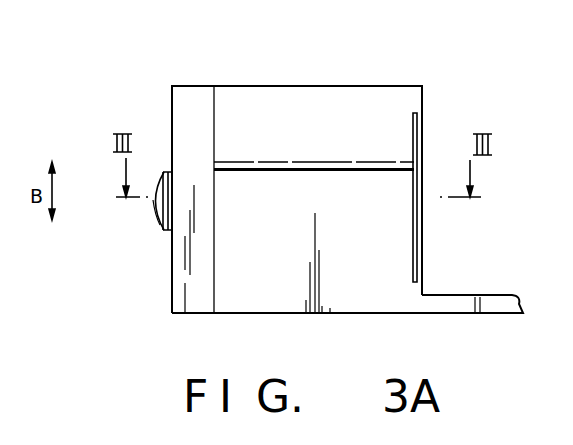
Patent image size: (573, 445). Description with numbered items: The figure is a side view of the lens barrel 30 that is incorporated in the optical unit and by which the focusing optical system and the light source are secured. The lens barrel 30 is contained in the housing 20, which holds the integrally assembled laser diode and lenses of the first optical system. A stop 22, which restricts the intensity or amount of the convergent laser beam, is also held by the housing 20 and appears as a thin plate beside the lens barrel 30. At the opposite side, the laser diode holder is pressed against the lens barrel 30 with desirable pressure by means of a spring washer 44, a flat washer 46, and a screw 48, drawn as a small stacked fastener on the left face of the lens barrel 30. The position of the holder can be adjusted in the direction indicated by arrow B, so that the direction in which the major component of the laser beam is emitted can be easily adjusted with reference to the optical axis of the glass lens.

The housing 20 is at (458, 295).
The stop 22 is at (418, 128).
The lens barrel 30 is at (405, 86).
The spring washer 44 is at (165, 232).
The flat washer 46 is at (165, 172).
The screw 48 is at (155, 212).